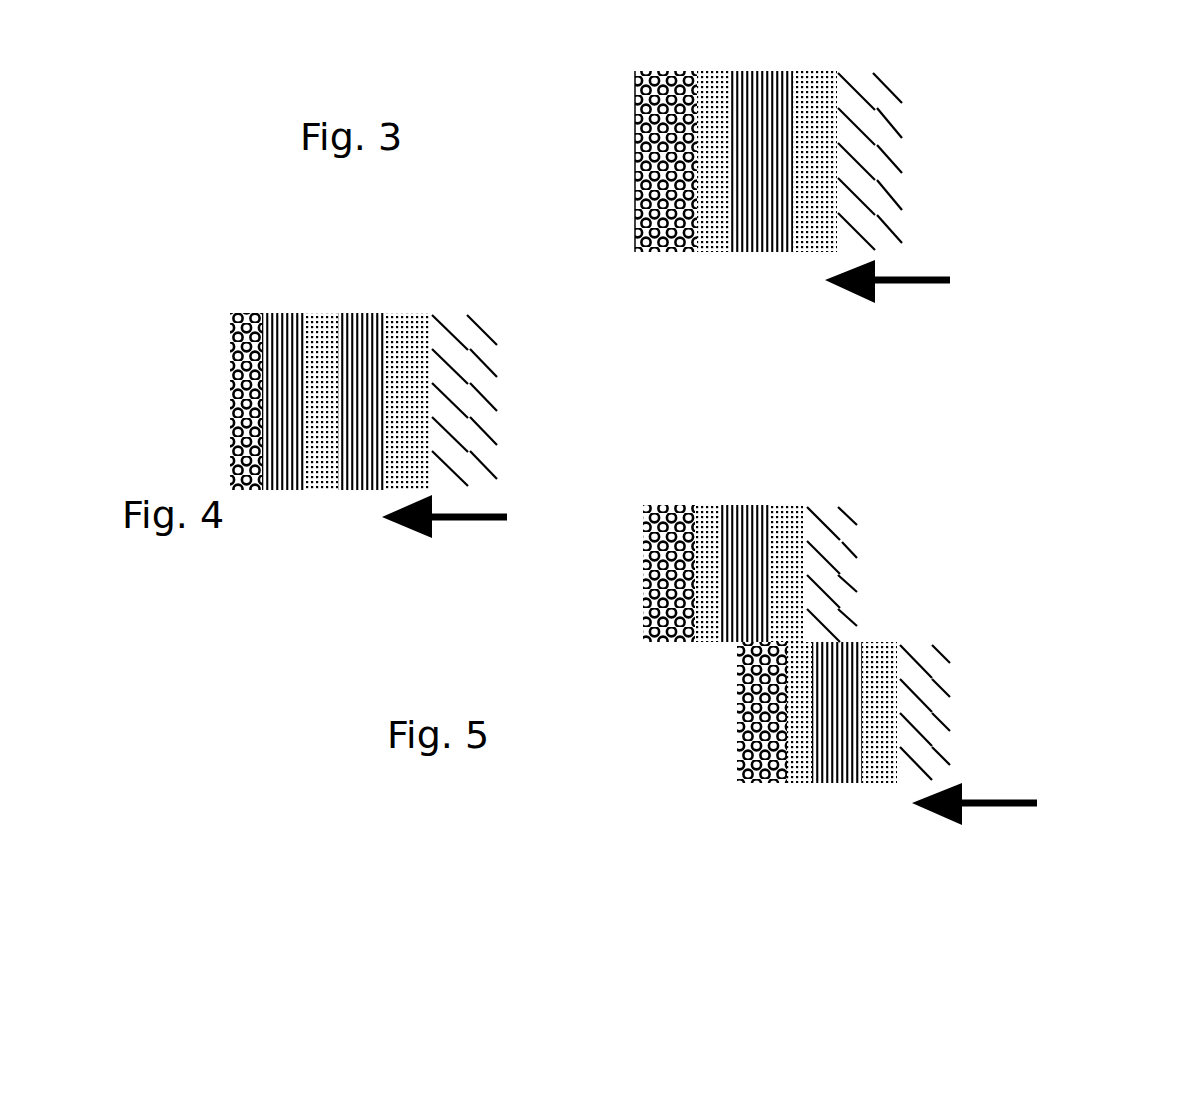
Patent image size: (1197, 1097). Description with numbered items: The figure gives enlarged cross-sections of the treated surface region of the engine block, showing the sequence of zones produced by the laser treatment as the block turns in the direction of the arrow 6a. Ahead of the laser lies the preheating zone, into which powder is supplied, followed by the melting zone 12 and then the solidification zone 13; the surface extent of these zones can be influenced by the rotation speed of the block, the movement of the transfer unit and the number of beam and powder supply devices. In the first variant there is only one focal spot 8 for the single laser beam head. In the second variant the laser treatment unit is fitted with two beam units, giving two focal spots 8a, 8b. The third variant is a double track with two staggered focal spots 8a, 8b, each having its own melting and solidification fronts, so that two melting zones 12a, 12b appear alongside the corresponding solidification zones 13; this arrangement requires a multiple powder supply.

In FIG. 3, the focal spot 8 is at (637, 83).
In FIG. 4, the focal spot 8a is at (267, 337).
In FIG. 5, the focal spot 8a is at (748, 575).
In FIG. 4, the focal spot 8b is at (340, 393).
In FIG. 5, the focal spot 8b is at (840, 758).
In FIG. 3, the solidification zone 13 is at (637, 210).
In FIG. 4, the solidification zone 13 is at (240, 453).
In FIG. 5, the solidification zone 13 is at (748, 727).
In FIG. 3, the melting zone 12 is at (717, 227).
In FIG. 4, the melting zone 12 is at (313, 465).
In FIG. 5, the melting zone 12a is at (713, 523).
In FIG. 5, the melting zone 12b is at (798, 720).
In FIG. 3, the arrow 6a is at (917, 284).
In FIG. 4, the arrow 6a is at (490, 516).
In FIG. 5, the arrow 6a is at (996, 800).